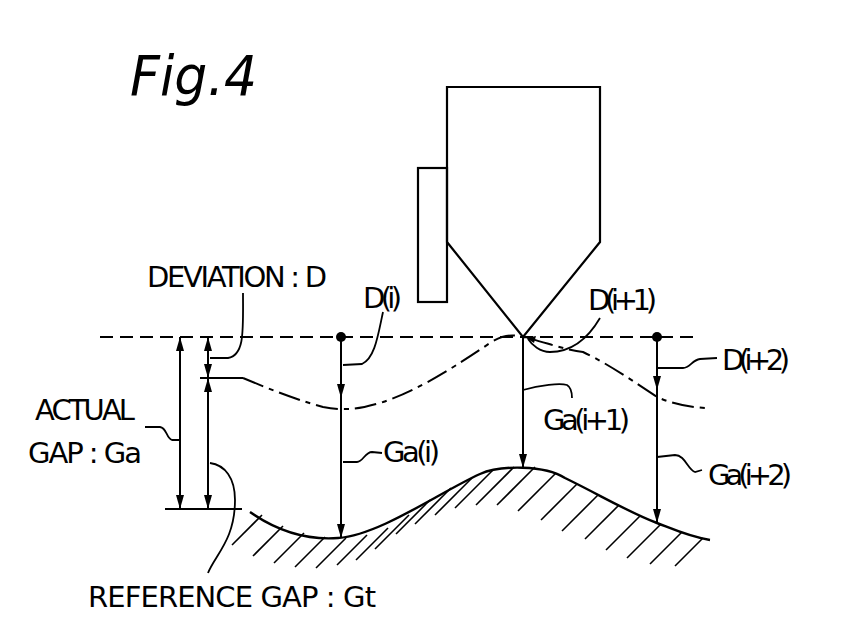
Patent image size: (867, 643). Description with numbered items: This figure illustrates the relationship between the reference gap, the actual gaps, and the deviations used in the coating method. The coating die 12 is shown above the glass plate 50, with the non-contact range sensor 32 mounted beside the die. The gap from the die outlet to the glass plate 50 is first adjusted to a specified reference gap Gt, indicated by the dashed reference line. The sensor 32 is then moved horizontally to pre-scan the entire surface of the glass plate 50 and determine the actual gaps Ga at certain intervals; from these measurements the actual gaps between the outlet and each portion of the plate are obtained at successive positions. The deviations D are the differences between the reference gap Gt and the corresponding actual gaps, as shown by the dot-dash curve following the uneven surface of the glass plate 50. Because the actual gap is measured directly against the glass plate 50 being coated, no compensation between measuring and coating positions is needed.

The coating die 12 is at (600, 197).
The non-contact range sensor 32 is at (417, 220).
The glass plate 50 is at (702, 538).